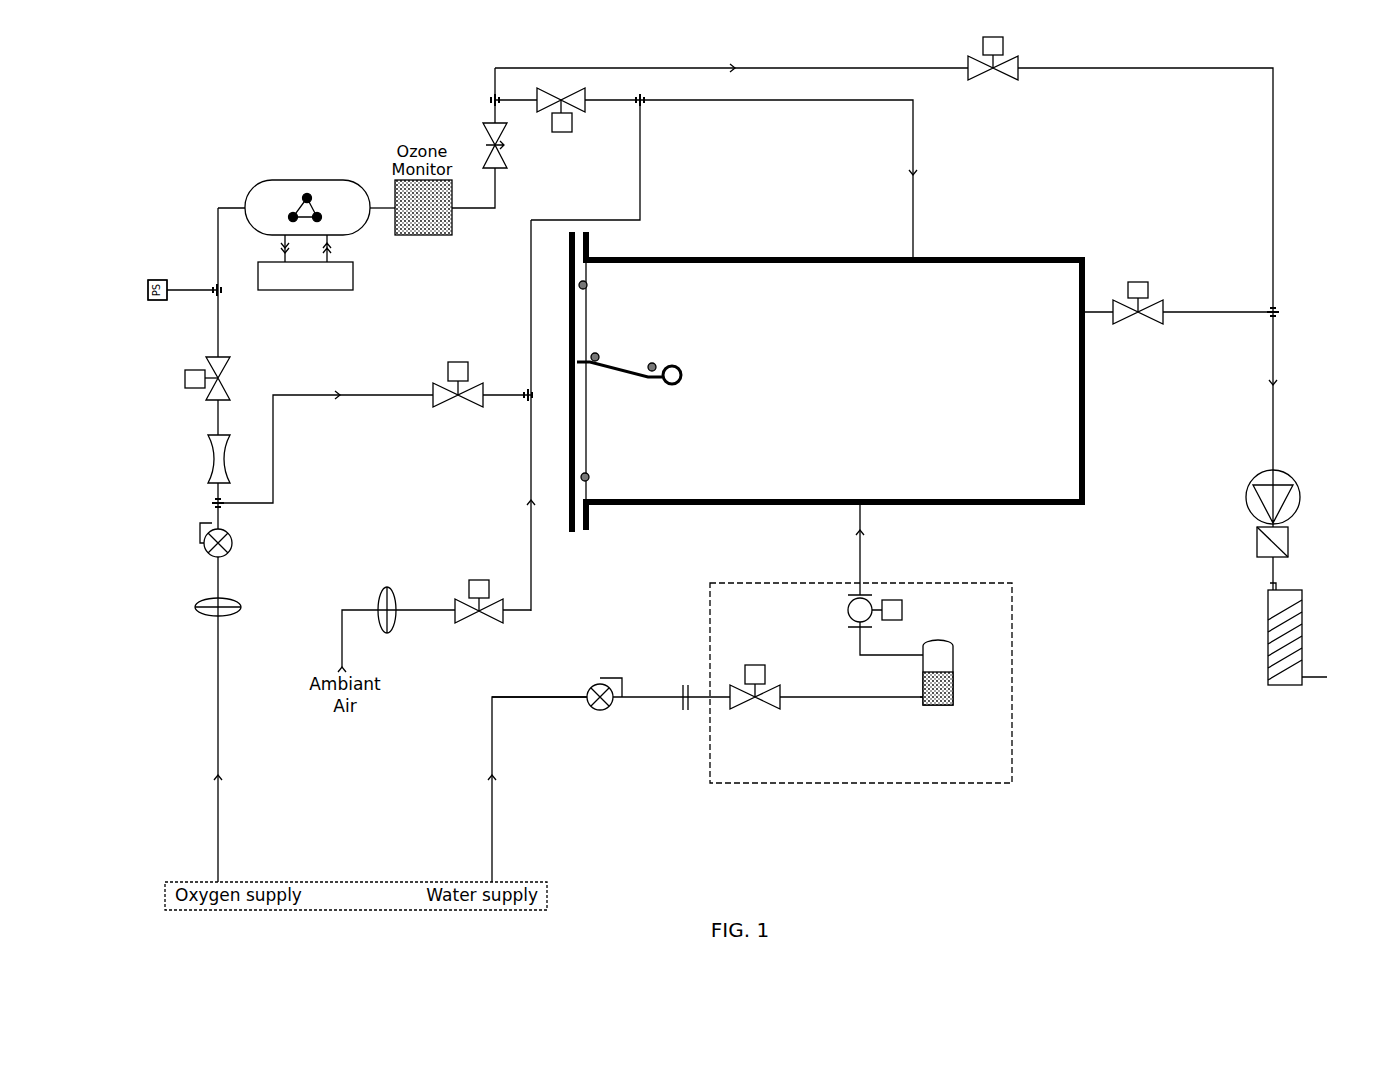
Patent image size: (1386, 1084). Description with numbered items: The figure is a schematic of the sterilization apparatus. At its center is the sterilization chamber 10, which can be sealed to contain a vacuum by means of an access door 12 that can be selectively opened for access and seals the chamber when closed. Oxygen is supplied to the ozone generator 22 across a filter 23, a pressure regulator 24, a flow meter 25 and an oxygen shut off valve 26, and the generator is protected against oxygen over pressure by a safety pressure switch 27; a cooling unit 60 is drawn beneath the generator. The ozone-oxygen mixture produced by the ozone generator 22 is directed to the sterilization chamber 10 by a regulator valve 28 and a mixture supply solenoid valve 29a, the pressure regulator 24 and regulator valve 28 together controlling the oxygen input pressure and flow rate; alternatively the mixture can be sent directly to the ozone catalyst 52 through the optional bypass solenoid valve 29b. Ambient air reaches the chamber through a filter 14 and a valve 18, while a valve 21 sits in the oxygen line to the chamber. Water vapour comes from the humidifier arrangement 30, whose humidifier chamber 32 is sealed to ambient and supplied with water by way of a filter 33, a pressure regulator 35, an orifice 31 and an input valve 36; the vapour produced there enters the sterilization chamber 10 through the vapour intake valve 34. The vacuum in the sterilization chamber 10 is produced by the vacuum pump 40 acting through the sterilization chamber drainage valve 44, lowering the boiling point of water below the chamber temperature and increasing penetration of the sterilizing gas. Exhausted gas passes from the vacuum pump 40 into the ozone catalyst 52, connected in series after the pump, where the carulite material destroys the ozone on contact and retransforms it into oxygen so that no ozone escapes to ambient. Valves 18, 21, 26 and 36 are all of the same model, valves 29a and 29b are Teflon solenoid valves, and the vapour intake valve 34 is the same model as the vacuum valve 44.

The sterilization chamber 10 is at (973, 257).
The access door 12 is at (578, 533).
The air filter 14 is at (387, 590).
The valve 18 is at (470, 580).
The valve 21 is at (435, 410).
The ozone generator 22 is at (253, 187).
The filter 23 is at (197, 607).
The pressure regulator 24 is at (208, 557).
The flow meter 25 is at (213, 460).
The oxygen shut off valve 26 is at (185, 390).
The safety pressure switch 27 is at (148, 300).
The regulator valve 28 is at (483, 127).
The mixture supply solenoid valve 29a is at (562, 132).
The bypass solenoid valve 29b is at (1013, 80).
The humidifier arrangement 30 is at (927, 783).
The orifice 31 is at (685, 710).
The humidifier chamber 32 is at (938, 707).
The filter 33 is at (546, 709).
The vapour intake valve 34 is at (845, 608).
The pressure regulator 35 is at (598, 678).
The input valve 36 is at (773, 708).
The vacuum pump 40 is at (1302, 497).
The sterilization chamber drainage valve 44 is at (1142, 282).
The ozone catalyst 52 is at (1302, 613).
The cooling unit 60 is at (353, 272).